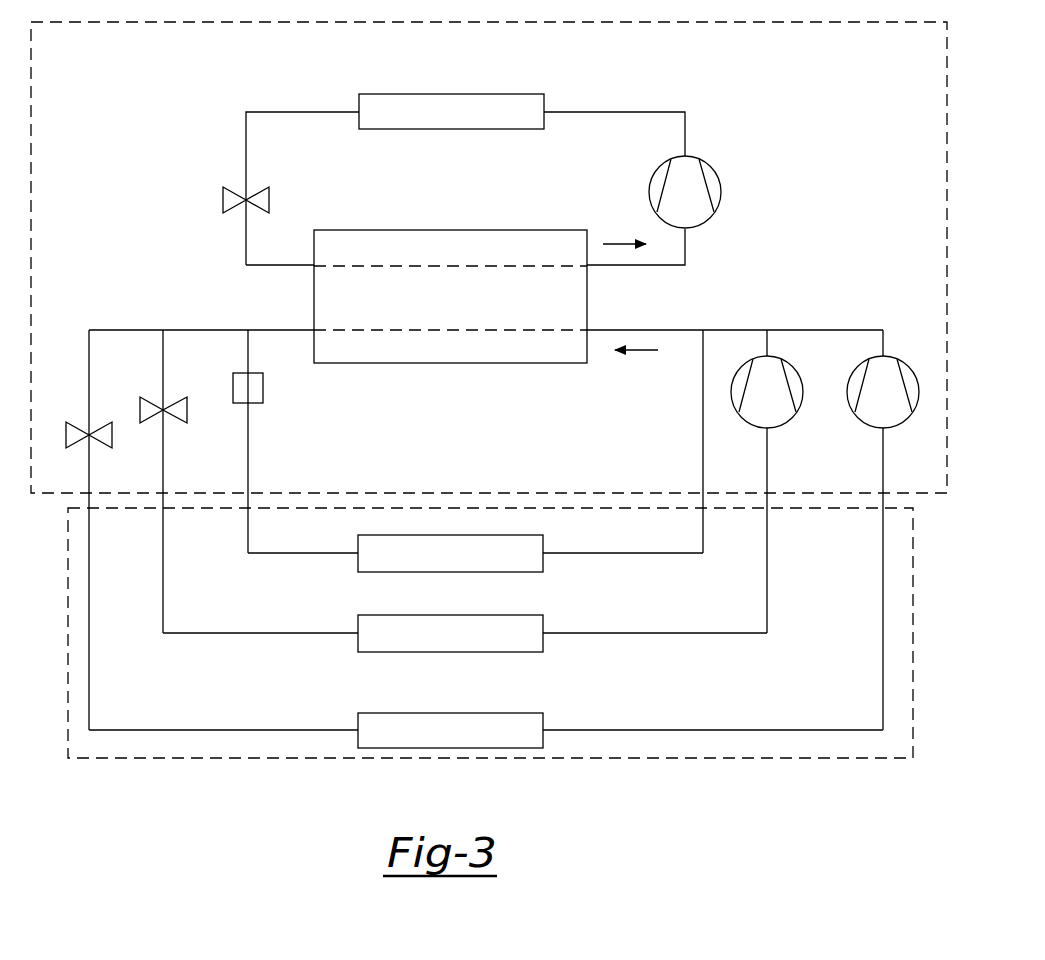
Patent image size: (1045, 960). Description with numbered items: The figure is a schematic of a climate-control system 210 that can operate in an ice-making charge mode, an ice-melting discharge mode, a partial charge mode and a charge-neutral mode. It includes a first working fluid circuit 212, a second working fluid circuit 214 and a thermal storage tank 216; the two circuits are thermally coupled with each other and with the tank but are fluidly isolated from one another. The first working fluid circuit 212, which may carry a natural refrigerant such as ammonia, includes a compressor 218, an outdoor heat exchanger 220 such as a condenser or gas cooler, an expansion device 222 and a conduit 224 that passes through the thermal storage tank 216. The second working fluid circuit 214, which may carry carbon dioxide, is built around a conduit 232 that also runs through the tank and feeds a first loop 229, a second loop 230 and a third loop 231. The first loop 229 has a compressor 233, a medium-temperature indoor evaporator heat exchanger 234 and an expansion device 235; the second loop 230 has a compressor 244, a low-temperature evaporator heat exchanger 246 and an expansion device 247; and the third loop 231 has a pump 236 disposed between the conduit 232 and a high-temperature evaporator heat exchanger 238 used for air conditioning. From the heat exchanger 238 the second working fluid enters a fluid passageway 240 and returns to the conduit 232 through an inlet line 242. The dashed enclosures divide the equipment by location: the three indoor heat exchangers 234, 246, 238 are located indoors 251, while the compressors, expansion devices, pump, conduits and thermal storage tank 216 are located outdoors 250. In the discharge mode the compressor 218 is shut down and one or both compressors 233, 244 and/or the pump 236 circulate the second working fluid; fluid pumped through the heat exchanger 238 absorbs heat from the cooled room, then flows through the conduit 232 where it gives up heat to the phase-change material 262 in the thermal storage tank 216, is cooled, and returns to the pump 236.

The climate-control system 210 is at (808, 138).
The first working fluid circuit 212 is at (660, 78).
The second working fluid circuit 214 is at (814, 303).
The thermal storage tank 216 is at (310, 298).
The compressor 218 is at (721, 200).
The heat exchanger 220 is at (546, 100).
The expansion device 222 is at (235, 193).
The conduit 224 is at (552, 268).
The first loop 229 is at (762, 638).
The second loop 230 is at (830, 737).
The third loop 231 is at (637, 558).
The conduit 232 is at (463, 330).
The compressor 233 is at (803, 392).
The heat exchanger 234 is at (358, 640).
The expansion device 235 is at (173, 412).
The pump 236 is at (263, 390).
The heat exchanger 238 is at (358, 560).
The fluid passageway 240 is at (698, 465).
The inlet line 242 is at (737, 330).
The compressor 244 is at (910, 362).
The heat exchanger 246 is at (375, 713).
The expansion device 247 is at (76, 430).
The outdoors 250 is at (31, 178).
The indoors 251 is at (200, 760).
The phase-change material 262 is at (336, 242).